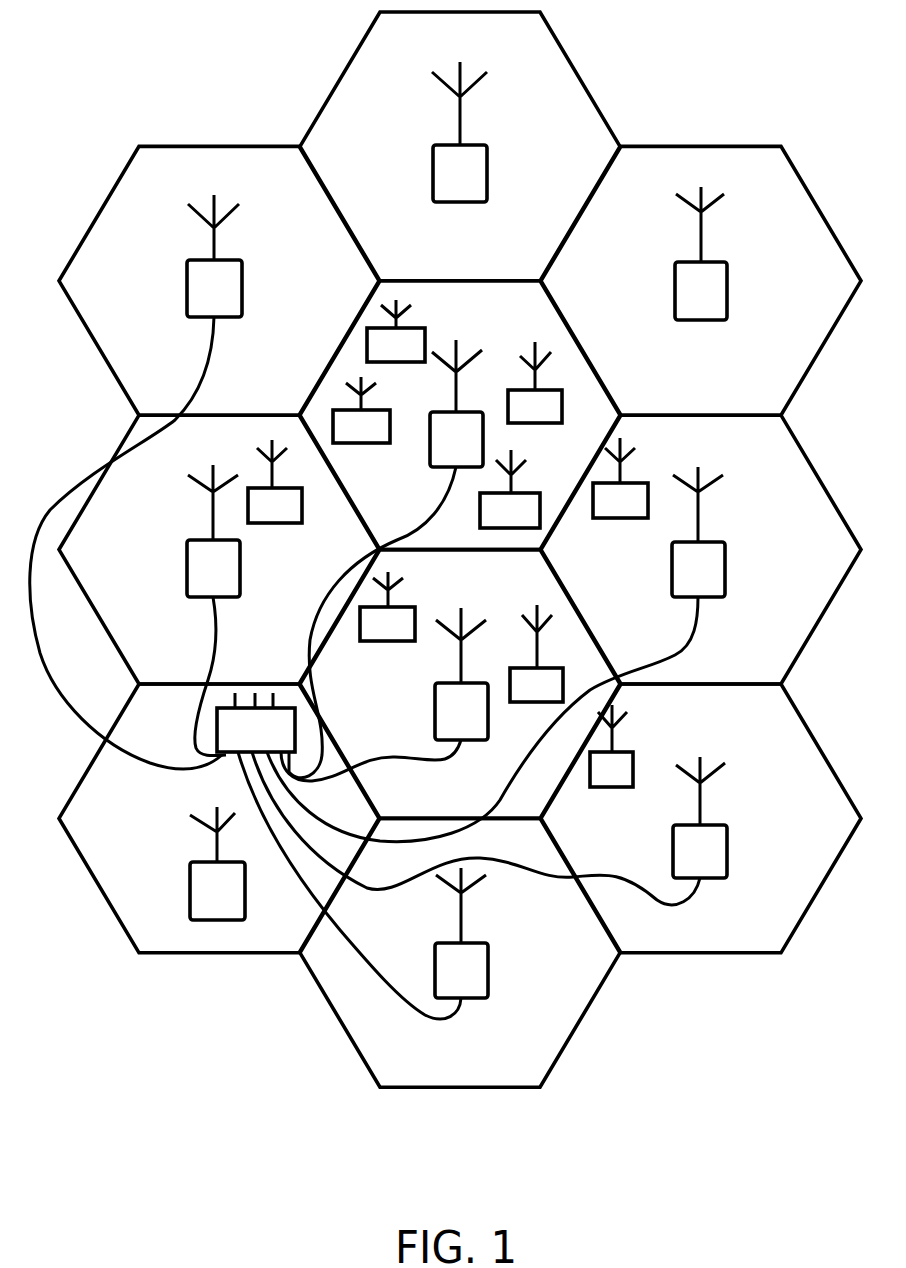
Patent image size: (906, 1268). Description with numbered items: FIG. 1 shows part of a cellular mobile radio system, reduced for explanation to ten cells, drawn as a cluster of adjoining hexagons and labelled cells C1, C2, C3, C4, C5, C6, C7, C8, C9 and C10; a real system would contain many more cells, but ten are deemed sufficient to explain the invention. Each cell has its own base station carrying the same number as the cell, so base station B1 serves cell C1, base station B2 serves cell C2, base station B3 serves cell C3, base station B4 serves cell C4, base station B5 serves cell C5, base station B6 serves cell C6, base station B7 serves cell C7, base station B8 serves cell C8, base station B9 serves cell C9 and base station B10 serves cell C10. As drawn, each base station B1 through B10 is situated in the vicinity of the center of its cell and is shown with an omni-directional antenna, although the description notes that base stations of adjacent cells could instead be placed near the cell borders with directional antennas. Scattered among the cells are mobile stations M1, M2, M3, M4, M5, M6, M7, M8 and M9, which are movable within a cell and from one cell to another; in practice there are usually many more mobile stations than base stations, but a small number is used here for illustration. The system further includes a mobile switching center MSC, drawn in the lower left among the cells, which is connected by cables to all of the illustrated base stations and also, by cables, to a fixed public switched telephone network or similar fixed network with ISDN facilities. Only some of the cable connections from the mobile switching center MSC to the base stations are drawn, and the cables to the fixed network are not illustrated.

The cell C1 is at (403, 527).
The cell C2 is at (658, 400).
The cell C3 is at (657, 658).
The cell C4 is at (413, 803).
The cell C5 is at (172, 660).
The cell C6 is at (173, 395).
The cell C7 is at (415, 262).
The cell C8 is at (647, 925).
The cell C9 is at (407, 1052).
The cell C10 is at (163, 905).
The base station B1 is at (386, 559).
The base station B2 is at (701, 253).
The base station B3 is at (496, 654).
The base station B4 is at (384, 694).
The base station B5 is at (213, 610).
The base station B6 is at (136, 482).
The base station B7 is at (459, 132).
The base station B8 is at (489, 828).
The base station B9 is at (363, 885).
The base station B10 is at (217, 863).
The mobile station M1 is at (611, 746).
The mobile station M2 is at (275, 481).
The mobile station M3 is at (361, 410).
The mobile station M4 is at (535, 383).
The mobile station M5 is at (620, 478).
The mobile station M6 is at (396, 331).
The mobile station M7 is at (510, 489).
The mobile station M8 is at (536, 654).
The mobile station M9 is at (387, 607).
The mobile switching center MSC is at (256, 722).